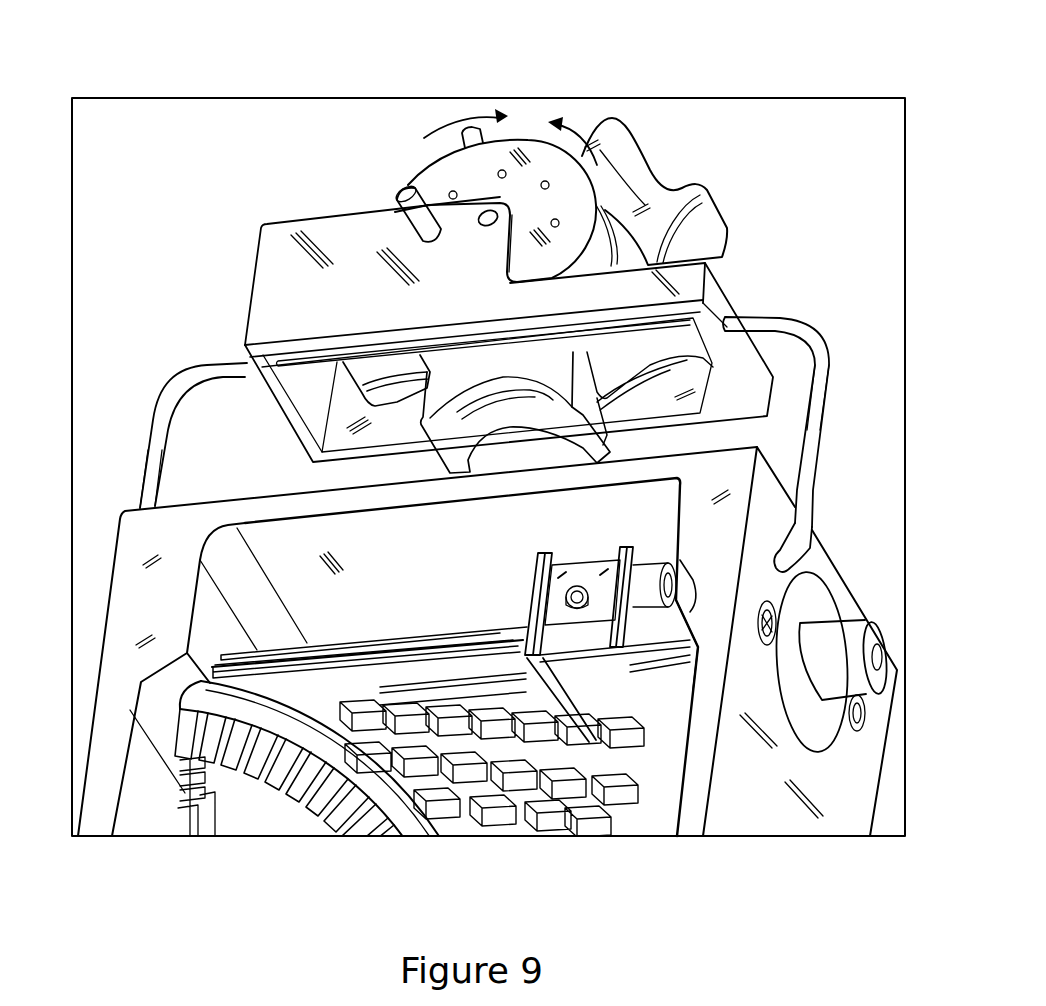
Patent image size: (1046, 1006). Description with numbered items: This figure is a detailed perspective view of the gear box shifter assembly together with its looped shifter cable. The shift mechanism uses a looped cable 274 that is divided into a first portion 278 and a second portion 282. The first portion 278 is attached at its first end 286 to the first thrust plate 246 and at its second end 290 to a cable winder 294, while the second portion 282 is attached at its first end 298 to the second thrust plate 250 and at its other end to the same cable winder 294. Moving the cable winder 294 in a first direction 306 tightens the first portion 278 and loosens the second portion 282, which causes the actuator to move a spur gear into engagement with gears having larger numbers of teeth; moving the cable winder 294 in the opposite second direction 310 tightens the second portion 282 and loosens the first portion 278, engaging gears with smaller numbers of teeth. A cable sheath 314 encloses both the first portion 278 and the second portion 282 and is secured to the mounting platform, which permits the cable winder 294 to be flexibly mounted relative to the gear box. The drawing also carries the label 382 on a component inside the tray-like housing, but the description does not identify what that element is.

The first thrust plate 246 is at (557, 530).
The second thrust plate 250 is at (670, 526).
The looped cable 274 is at (188, 370).
The first portion 278 is at (163, 454).
The second portion 282 is at (818, 433).
The first end 286 is at (530, 596).
The second end 290 is at (533, 330).
The cable winder 294 is at (526, 135).
The first end 298 is at (736, 569).
The first direction 306 is at (466, 105).
The second direction 310 is at (573, 110).
The cable sheath 314 is at (870, 372).
The guide saddles 382 is at (627, 311).